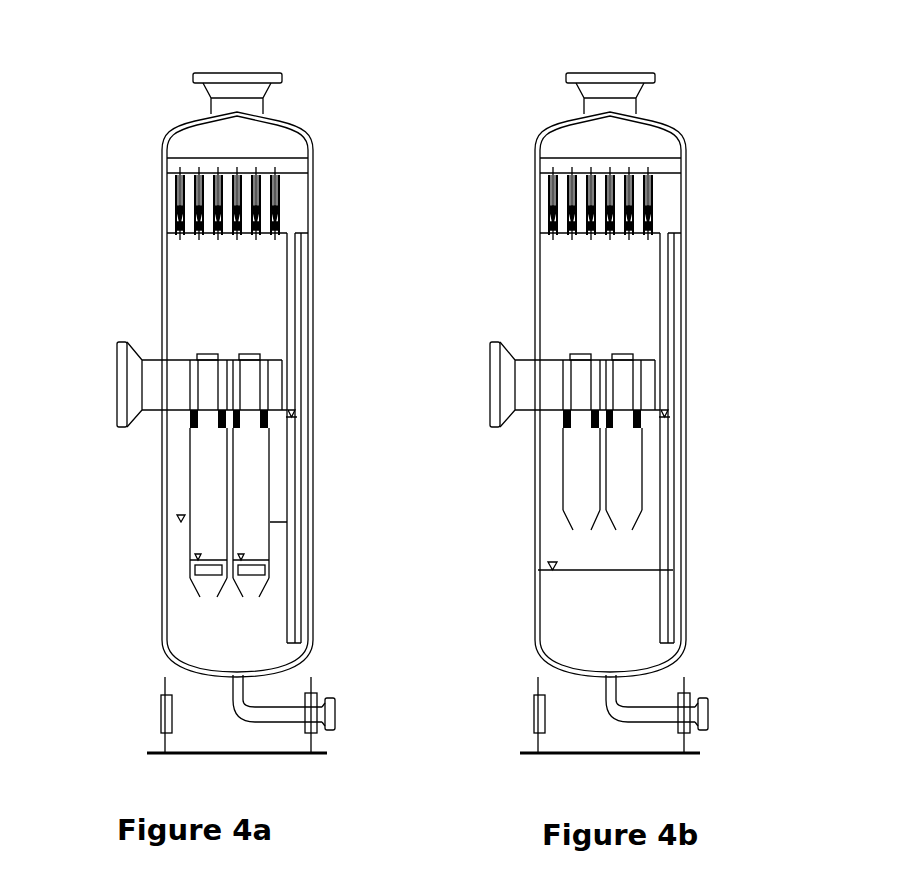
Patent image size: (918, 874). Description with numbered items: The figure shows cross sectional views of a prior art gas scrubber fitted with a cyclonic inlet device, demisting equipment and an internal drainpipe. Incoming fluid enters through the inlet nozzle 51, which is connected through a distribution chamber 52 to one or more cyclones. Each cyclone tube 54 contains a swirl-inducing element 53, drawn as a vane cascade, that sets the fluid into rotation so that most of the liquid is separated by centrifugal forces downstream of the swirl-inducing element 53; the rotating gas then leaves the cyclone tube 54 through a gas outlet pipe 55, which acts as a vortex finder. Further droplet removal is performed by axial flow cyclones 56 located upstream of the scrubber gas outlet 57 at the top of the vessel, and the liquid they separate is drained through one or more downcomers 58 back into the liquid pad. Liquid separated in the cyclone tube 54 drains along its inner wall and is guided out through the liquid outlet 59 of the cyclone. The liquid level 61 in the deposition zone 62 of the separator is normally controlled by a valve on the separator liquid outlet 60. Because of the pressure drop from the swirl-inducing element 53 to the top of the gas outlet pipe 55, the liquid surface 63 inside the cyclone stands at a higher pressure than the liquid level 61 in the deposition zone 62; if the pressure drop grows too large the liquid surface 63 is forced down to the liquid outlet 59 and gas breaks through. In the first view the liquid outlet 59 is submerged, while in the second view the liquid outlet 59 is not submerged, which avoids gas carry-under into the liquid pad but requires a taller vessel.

In FIG. 4a, the inlet nozzle 51 is at (118, 388).
In FIG. 4b, the inlet nozzle 51 is at (533, 370).
In FIG. 4a, the distribution chamber 52 is at (180, 383).
In FIG. 4b, the distribution chamber 52 is at (551, 333).
In FIG. 4a, the swirl-inducing element 53 is at (268, 422).
In FIG. 4b, the swirl-inducing element 53 is at (658, 429).
In FIG. 4a, the cyclone tube 54 is at (203, 460).
In FIG. 4b, the cyclone tube 54 is at (560, 469).
In FIG. 4a, the gas outlet pipe 55 is at (250, 352).
In FIG. 4b, the gas outlet pipe 55 is at (664, 318).
In FIG. 4a, the axial flow cyclones 56 is at (196, 220).
In FIG. 4b, the axial flow cyclones 56 is at (553, 203).
In FIG. 4a, the scrubber gas outlet 57 is at (238, 70).
In FIG. 4b, the scrubber gas outlet 57 is at (633, 69).
In FIG. 4a, the downcomer 58 is at (293, 547).
In FIG. 4b, the downcomer 58 is at (713, 438).
In FIG. 4a, the liquid outlet 59 is at (208, 597).
In FIG. 4b, the liquid outlet 59 is at (657, 508).
In FIG. 4a, the separator liquid outlet 60 is at (335, 714).
In FIG. 4b, the separator liquid outlet 60 is at (706, 702).
In FIG. 4a, the liquid level 61 is at (187, 522).
In FIG. 4b, the liquid level 61 is at (570, 566).
In FIG. 4a, the deposition zone 62 is at (255, 253).
In FIG. 4b, the deposition zone 62 is at (649, 438).
In FIG. 4a, the liquid surface inside the cyclone 63 is at (242, 557).